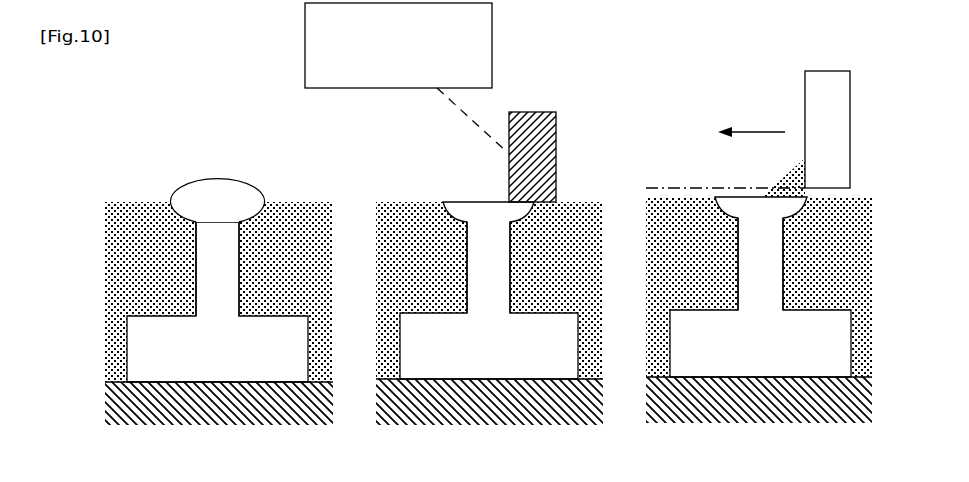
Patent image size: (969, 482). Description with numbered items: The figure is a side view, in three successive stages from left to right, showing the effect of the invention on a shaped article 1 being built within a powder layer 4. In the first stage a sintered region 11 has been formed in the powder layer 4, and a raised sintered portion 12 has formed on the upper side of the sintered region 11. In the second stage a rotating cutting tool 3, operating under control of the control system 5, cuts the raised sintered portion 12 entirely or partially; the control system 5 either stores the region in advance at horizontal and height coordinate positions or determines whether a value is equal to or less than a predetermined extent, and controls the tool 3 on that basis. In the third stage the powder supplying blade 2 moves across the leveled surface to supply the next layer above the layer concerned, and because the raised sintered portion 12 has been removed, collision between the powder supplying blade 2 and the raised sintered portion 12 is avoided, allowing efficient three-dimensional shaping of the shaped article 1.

The shaped article 1 is at (125, 351).
The powder supplying blade 2 is at (822, 130).
The tool 3 is at (557, 127).
The powder layer 4 is at (138, 227).
The control system 5 is at (297, 30).
The sintered region 11 is at (217, 293).
The raised sintered portion 12 is at (225, 190).